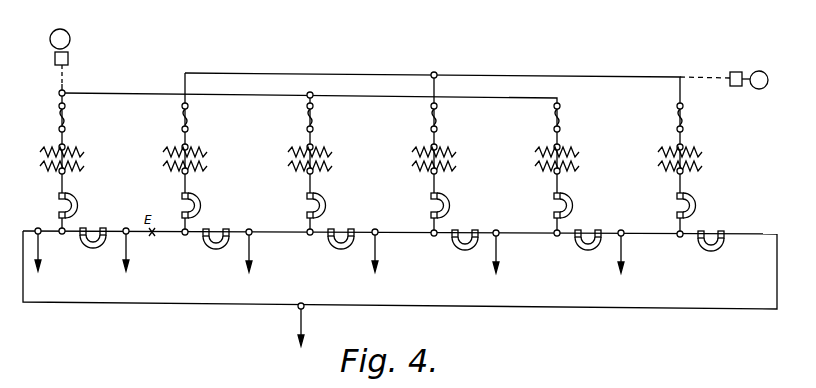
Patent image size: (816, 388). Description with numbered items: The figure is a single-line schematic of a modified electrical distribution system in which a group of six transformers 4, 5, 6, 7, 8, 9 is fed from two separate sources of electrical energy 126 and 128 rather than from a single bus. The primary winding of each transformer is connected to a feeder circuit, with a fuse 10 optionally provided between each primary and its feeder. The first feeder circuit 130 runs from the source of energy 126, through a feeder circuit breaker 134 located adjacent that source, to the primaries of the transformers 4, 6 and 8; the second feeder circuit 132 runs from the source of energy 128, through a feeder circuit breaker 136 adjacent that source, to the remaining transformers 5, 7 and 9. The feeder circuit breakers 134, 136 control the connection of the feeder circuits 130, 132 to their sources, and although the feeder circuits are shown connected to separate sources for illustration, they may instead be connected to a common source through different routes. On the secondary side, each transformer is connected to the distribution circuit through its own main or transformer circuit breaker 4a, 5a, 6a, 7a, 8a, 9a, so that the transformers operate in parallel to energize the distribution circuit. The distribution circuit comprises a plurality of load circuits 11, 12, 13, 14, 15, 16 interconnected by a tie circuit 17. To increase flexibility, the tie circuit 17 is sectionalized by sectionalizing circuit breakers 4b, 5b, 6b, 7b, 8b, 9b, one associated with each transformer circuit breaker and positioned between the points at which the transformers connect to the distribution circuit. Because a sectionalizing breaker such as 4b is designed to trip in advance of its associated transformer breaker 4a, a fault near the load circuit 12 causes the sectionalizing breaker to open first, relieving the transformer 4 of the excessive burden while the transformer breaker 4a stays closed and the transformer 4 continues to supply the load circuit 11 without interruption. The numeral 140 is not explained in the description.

The transformer 4 is at (84, 158).
The transformer 5 is at (207, 158).
The transformer 6 is at (332, 158).
The transformer 7 is at (456, 158).
The transformer 8 is at (579, 158).
The transformer 9 is at (702, 158).
The transformer circuit breaker 4a is at (79, 205).
The transformer circuit breaker 5a is at (202, 205).
The transformer circuit breaker 6a is at (327, 205).
The transformer circuit breaker 7a is at (451, 205).
The transformer circuit breaker 8a is at (574, 205).
The transformer circuit breaker 9a is at (697, 205).
The sectionalizing circuit breaker 4b is at (91, 247).
The sectionalizing circuit breaker 5b is at (214, 248).
The sectionalizing circuit breaker 6b is at (339, 248).
The sectionalizing circuit breaker 7b is at (463, 249).
The sectionalizing circuit breaker 8b is at (586, 249).
The sectionalizing circuit breaker 9b is at (709, 250).
The fuse 10 is at (65, 119).
The load circuit 11 is at (39, 261).
The load circuit 12 is at (126, 261).
The load circuit 13 is at (249, 261).
The load circuit 14 is at (375, 262).
The load circuit 15 is at (497, 262).
The load circuit 16 is at (620, 263).
The tie circuit 17 is at (425, 235).
The source of electrical energy 126 is at (70, 39).
The source of electrical energy 128 is at (770, 62).
The feeder circuit 130 is at (64, 78).
The feeder circuit 132 is at (727, 80).
The feeder circuit breaker 134 is at (68, 58).
The feeder circuit breaker 136 is at (733, 72).
The return conductor loop 140 is at (651, 306).